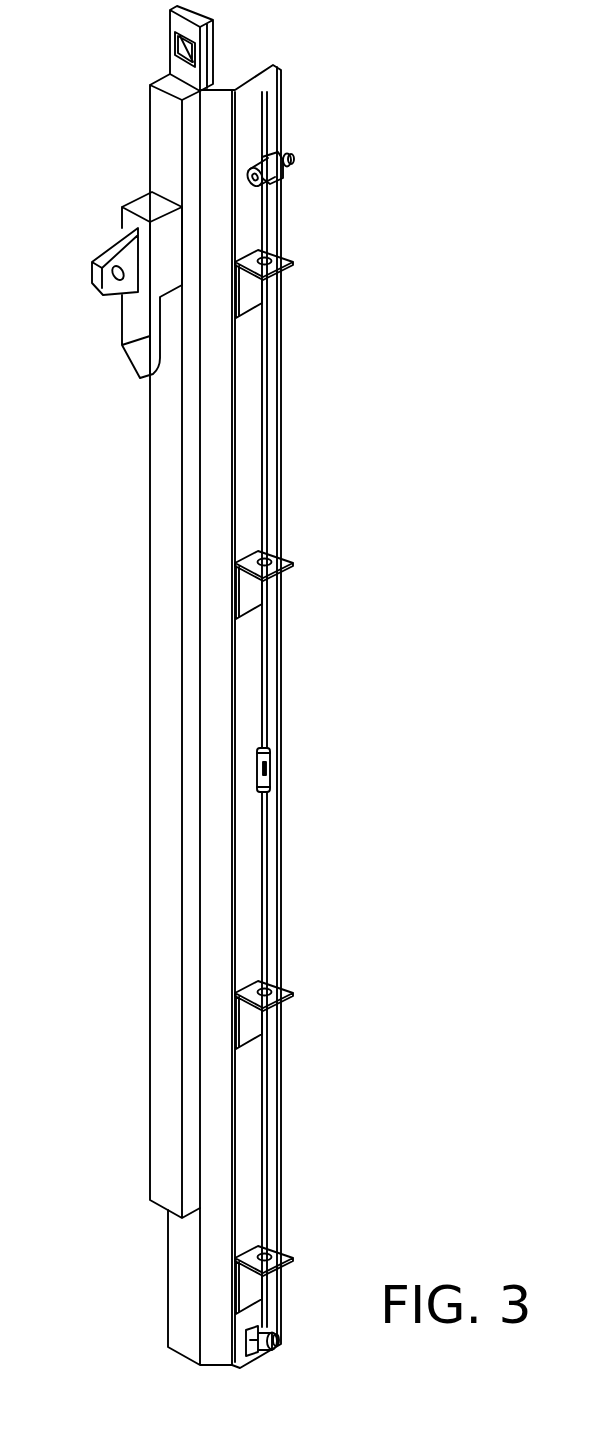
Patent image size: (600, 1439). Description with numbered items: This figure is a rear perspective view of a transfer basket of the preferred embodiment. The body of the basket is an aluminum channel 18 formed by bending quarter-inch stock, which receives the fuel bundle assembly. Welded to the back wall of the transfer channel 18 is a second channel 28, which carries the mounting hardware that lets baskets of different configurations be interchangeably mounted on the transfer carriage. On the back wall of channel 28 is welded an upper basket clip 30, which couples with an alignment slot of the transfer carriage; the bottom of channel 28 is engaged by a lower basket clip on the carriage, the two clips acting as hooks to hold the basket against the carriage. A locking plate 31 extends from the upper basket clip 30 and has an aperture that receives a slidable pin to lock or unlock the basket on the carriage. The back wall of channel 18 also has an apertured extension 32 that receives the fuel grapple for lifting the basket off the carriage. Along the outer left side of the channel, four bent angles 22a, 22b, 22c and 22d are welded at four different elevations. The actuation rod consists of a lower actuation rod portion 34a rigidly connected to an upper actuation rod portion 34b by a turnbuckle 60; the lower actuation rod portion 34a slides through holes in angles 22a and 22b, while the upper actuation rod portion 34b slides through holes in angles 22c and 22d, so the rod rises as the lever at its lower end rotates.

The channel 18 is at (285, 368).
The channel 28 is at (150, 605).
The apertured extension 32 is at (170, 43).
The upper basket clip 30 is at (118, 316).
The locking plate 31 is at (105, 250).
The lower actuation rod portion 34a is at (268, 862).
The upper actuation rod portion 34b is at (270, 452).
The turnbuckle 60 is at (270, 760).
The bent angle 22a is at (290, 1248).
The bent angle 22b is at (290, 990).
The bent angle 22c is at (285, 558).
The bent angle 22d is at (285, 255).